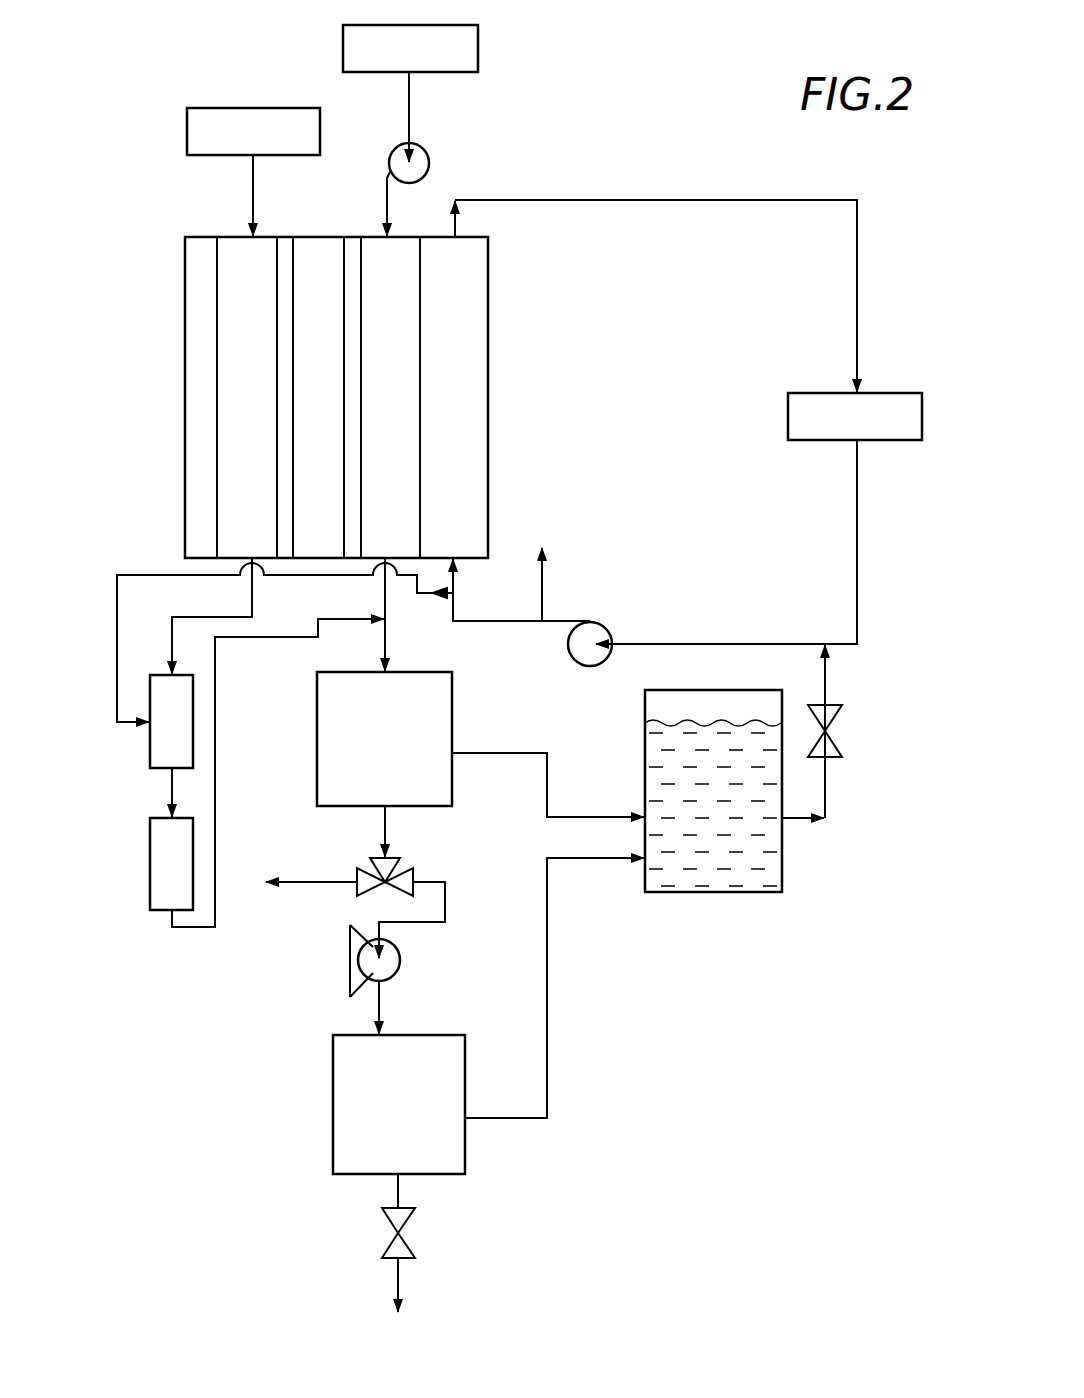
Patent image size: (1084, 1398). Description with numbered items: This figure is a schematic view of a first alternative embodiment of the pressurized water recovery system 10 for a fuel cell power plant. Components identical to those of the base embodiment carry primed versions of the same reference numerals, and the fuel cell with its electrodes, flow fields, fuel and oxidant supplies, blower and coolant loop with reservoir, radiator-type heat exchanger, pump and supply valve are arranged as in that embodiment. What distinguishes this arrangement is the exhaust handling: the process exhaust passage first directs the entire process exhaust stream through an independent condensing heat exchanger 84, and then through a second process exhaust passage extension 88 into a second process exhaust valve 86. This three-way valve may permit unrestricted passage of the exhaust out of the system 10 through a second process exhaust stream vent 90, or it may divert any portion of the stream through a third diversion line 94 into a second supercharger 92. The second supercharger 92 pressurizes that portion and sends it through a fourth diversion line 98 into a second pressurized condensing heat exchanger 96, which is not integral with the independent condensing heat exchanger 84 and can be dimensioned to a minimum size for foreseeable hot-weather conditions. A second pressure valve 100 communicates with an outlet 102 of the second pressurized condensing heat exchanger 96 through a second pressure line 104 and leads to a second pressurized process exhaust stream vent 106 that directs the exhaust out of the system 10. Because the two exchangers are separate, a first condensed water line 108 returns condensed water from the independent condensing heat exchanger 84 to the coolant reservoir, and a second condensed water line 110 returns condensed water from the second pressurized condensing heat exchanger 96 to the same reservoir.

The pressurized water recovery system 10 is at (660, 137).
The independent condensing heat exchanger 84 is at (355, 718).
The second process exhaust valve 86 is at (410, 872).
The second process exhaust passage extension 88 is at (378, 812).
The second process exhaust stream vent 90 is at (322, 885).
The second supercharger 92 is at (400, 948).
The third diversion line 94 is at (448, 900).
The second pressurized condensing heat exchanger 96 is at (345, 1105).
The fourth diversion line 98 is at (400, 990).
The second pressure valve 100 is at (413, 1225).
The outlet 102 is at (395, 1180).
The second pressure line 104 is at (405, 1190).
The second pressurized process exhaust stream vent 106 is at (395, 1275).
The first condensed water line 108 is at (605, 815).
The second condensed water line 110 is at (548, 898).